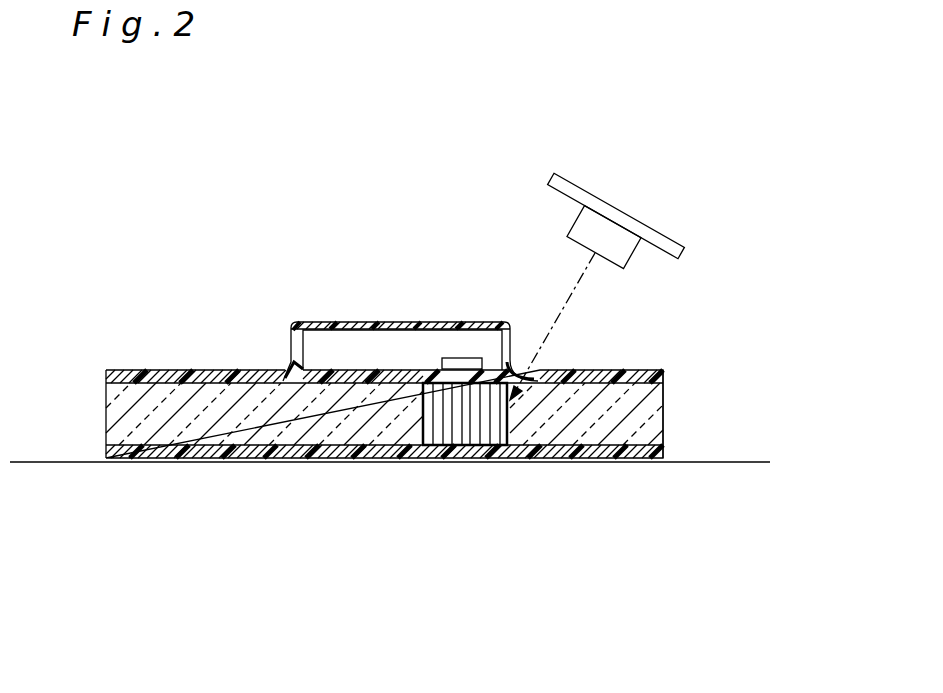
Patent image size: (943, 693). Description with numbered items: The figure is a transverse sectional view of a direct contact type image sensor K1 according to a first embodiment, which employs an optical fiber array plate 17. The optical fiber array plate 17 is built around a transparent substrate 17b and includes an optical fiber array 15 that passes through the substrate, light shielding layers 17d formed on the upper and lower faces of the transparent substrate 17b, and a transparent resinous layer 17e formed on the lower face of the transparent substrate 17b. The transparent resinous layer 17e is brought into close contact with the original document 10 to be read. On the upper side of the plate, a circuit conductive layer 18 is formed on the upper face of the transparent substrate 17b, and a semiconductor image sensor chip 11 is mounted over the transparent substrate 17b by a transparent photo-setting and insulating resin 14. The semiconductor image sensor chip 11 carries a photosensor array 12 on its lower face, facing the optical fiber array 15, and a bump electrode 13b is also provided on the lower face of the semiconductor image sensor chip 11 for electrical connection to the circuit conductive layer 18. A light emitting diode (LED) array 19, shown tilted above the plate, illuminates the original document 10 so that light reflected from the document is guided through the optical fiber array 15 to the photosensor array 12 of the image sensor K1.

The original document 10 is at (557, 478).
The semiconductor image sensor chip 11 is at (348, 335).
The photosensor array 12 is at (462, 358).
The bump electrode 13b is at (340, 368).
The transparent photo-setting and insulating resin 14 is at (417, 372).
The optical fiber array 15 is at (472, 422).
The optical fiber array plate 17 is at (693, 415).
The transparent substrate 17b is at (180, 433).
The light shielding layers 17d is at (106, 373).
The transparent resinous layer 17e is at (455, 450).
The circuit conductive layer 18 is at (163, 378).
The light emitting diode (LED) array 19 is at (620, 207).
The direct contact type image sensor K1 is at (435, 192).